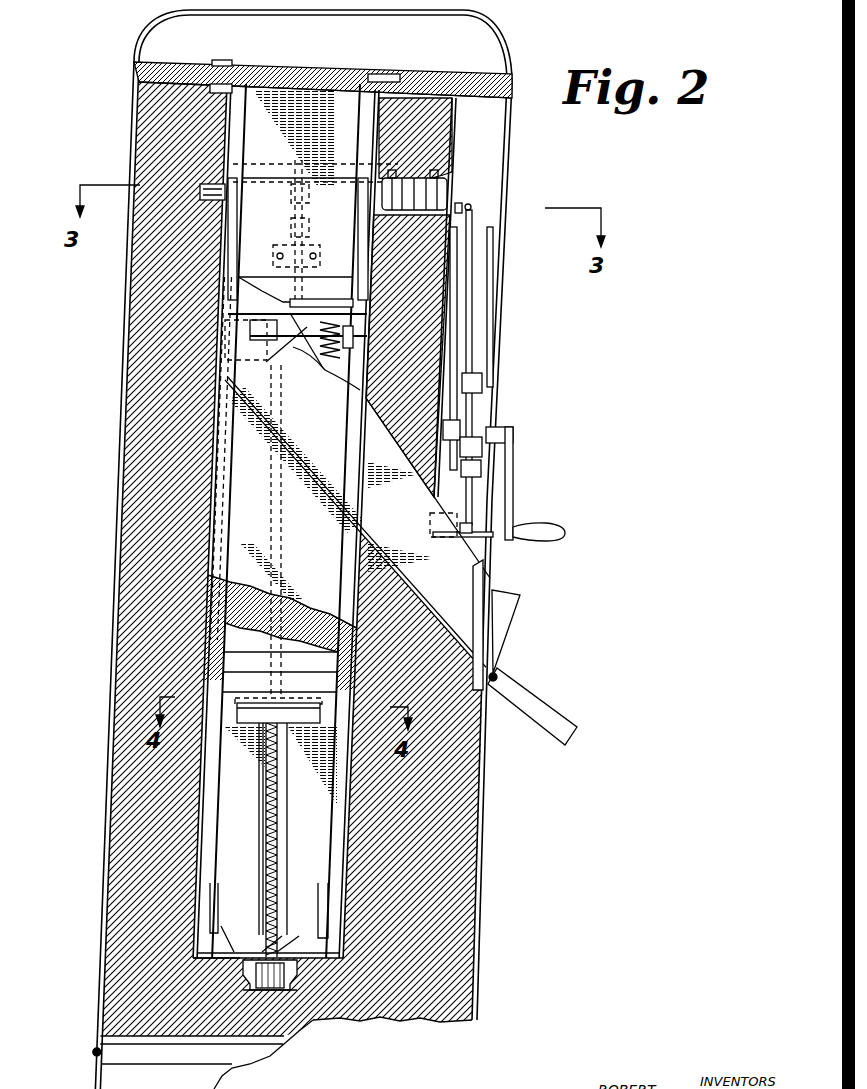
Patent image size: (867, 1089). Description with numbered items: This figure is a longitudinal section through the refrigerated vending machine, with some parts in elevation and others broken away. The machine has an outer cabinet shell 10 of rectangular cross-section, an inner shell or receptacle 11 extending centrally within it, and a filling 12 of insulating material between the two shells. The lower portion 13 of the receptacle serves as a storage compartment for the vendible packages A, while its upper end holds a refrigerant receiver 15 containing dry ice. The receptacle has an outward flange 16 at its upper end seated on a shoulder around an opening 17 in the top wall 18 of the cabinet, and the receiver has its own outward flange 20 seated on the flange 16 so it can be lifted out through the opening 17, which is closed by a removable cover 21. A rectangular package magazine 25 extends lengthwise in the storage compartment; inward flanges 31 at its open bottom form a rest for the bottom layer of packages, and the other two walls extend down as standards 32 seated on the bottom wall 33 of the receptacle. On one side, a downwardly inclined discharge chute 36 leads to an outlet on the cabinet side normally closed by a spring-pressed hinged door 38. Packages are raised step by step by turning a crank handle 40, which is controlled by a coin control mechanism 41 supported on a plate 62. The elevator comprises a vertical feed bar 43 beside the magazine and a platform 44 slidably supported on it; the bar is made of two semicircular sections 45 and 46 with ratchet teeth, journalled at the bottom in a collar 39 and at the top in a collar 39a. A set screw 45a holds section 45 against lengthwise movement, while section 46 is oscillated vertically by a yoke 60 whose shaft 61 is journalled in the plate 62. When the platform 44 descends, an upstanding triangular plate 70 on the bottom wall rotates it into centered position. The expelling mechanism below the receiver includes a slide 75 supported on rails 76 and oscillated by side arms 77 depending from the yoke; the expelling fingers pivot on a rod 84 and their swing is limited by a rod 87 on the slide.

The outer cabinet shell 10 is at (484, 884).
The inner shell or receptacle 11 is at (380, 117).
The filling 12 is at (402, 988).
The lower portion of the inner receptacle 13 is at (357, 667).
The refrigerant receiver 15 is at (226, 122).
The outward flange 16 is at (212, 80).
The opening 17 is at (400, 86).
The top wall 18 is at (170, 66).
The outward flange 20 is at (243, 68).
The removable cover 21 is at (320, 72).
The package magazine 25 is at (212, 828).
The flanges 31 is at (220, 933).
The standards 32 is at (222, 958).
The bottom wall 33 is at (205, 952).
The discharge chute 36 is at (440, 610).
The hinged door 38 is at (513, 633).
The collar 39 is at (207, 1003).
The collar 39a is at (317, 303).
The crank handle 40 is at (513, 490).
The coin control mechanism 41 is at (488, 405).
The feed or elevator bar 43 is at (280, 843).
The platform 44 is at (258, 716).
The bar section 45 is at (262, 878).
The set screw 45a is at (260, 980).
The bar section 46 is at (283, 882).
The yoke 60 is at (260, 163).
The shaft 61 is at (427, 187).
The plate 62 is at (456, 127).
The triangular plate 70 is at (280, 952).
The slide 75 is at (367, 314).
The rails 76 is at (365, 335).
The side arms 77 is at (227, 258).
The rod 84 is at (308, 367).
The rod 87 is at (295, 350).
The vendible package A is at (228, 668).